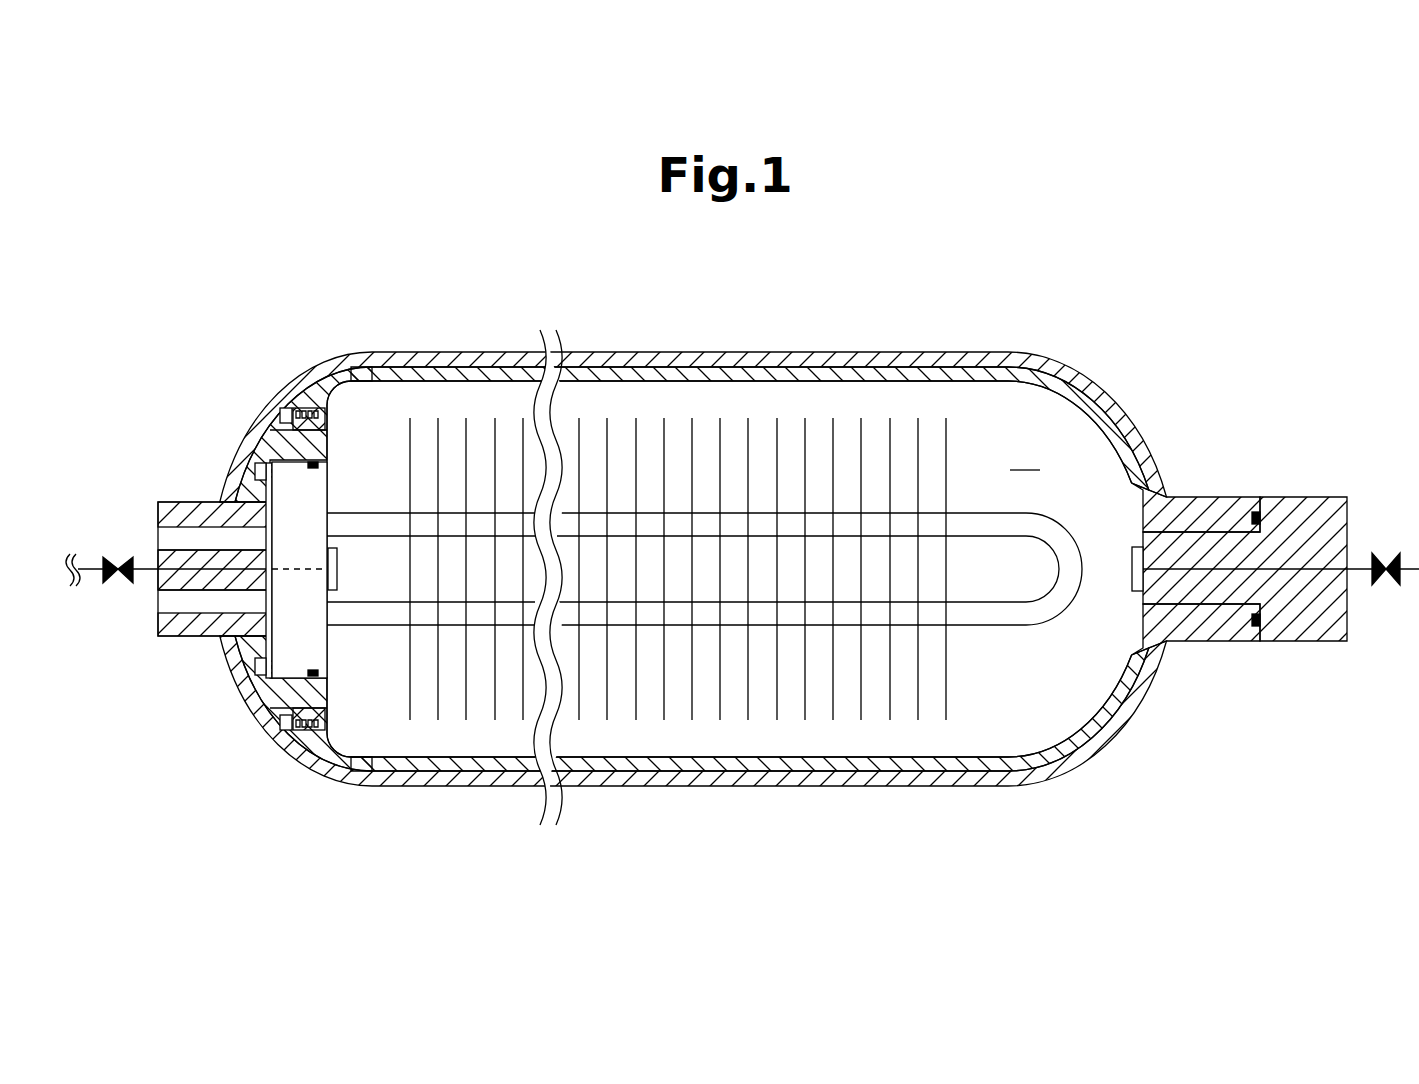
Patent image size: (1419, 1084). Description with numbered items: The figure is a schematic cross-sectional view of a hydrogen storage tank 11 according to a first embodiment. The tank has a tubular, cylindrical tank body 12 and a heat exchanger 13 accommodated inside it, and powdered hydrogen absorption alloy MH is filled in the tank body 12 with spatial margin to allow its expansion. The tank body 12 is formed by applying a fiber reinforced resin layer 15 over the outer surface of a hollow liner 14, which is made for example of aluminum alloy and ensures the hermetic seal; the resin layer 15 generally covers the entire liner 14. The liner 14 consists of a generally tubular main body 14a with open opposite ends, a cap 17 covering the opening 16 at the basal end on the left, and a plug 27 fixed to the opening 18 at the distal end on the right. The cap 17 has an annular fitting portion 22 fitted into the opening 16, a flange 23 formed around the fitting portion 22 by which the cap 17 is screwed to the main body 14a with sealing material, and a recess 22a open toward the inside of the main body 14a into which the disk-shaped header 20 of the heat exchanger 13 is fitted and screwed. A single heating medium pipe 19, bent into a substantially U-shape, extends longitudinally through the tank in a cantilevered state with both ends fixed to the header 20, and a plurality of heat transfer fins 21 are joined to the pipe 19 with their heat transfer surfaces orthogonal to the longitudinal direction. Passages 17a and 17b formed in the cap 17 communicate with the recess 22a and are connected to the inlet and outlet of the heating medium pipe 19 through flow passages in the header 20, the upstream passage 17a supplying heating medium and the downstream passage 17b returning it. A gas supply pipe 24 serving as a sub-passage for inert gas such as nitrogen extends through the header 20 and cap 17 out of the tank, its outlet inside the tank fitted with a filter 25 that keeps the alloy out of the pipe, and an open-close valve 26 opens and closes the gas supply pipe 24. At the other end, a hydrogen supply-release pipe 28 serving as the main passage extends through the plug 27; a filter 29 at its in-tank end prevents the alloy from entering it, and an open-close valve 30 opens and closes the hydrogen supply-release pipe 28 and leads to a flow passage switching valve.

The hydrogen storage tank 11 is at (693, 527).
The tank body 12 is at (693, 533).
The heat exchanger 13 is at (750, 747).
The liner 14 is at (669, 364).
The main body 14a is at (606, 378).
The fiber reinforced resin layer 15 is at (705, 358).
The opening 16 is at (262, 700).
The cap 17 is at (175, 528).
The passage 17a is at (162, 512).
The passage 17b is at (172, 612).
The opening 18 is at (1230, 535).
The heating medium pipe 19 is at (1010, 612).
The header 20 is at (320, 645).
The heat transfer fins 21 is at (412, 706).
The fitting portion 22 is at (328, 569).
The recess 22a is at (312, 468).
The flange 23 is at (283, 407).
The gas supply pipe 24 is at (268, 545).
The filter 25 is at (339, 578).
The open-close valve 26 is at (116, 558).
The plug 27 is at (1280, 644).
The hydrogen supply-release pipe 28 is at (1245, 578).
The filter 29 is at (1133, 562).
The open-close valve 30 is at (1388, 556).